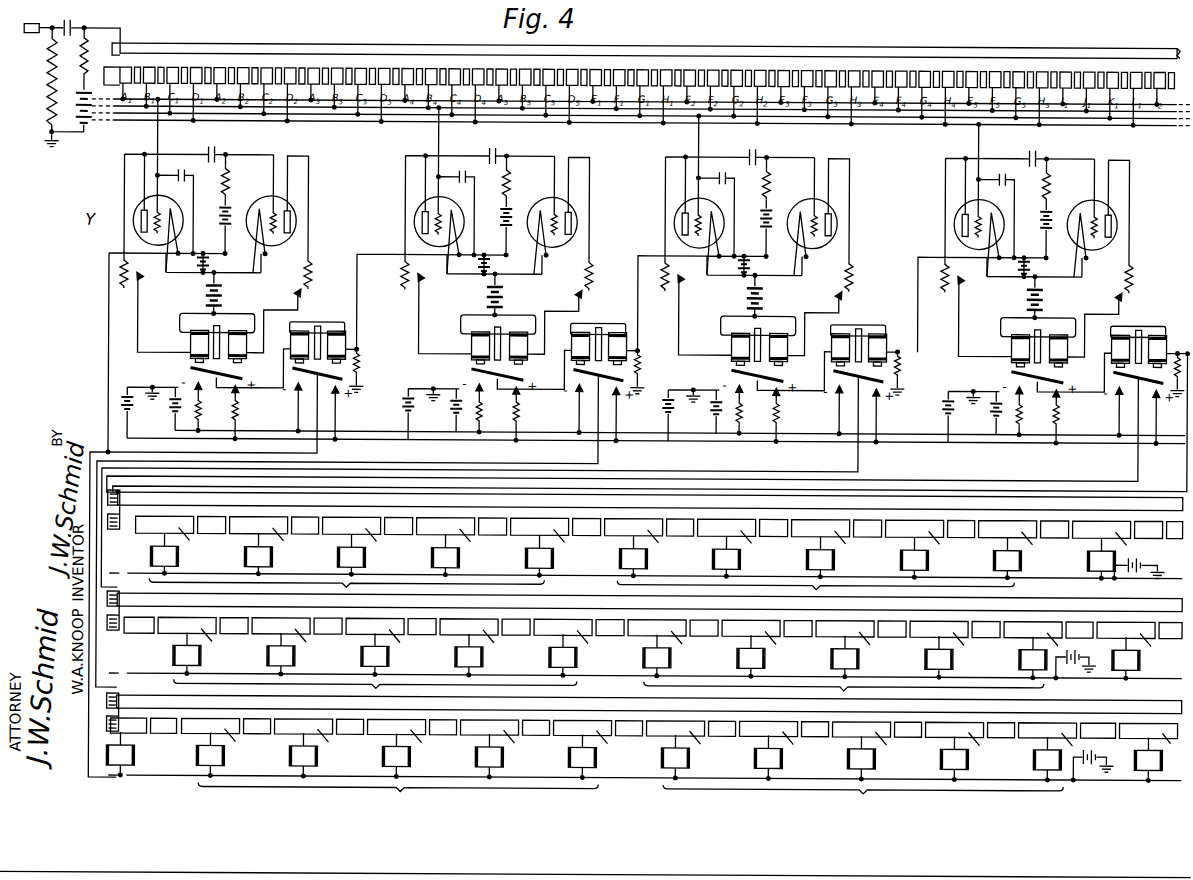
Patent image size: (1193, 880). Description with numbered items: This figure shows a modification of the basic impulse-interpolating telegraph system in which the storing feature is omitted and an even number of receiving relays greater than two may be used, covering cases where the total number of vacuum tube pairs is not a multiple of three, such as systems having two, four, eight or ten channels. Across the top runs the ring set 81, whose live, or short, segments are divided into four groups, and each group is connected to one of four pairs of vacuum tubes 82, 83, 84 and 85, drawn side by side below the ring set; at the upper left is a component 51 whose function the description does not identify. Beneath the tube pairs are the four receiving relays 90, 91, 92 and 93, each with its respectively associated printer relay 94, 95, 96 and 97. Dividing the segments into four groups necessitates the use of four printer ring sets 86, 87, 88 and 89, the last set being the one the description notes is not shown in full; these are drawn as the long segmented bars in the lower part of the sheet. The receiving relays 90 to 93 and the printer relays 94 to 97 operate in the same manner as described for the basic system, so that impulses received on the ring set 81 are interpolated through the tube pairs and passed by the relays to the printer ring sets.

The signal input circuit 51 is at (100, 125).
The ring set 81 is at (180, 60).
The pair of vacuum tubes 82 is at (253, 165).
The pair of vacuum tubes 83 is at (534, 165).
The pair of vacuum tubes 84 is at (794, 165).
The pair of vacuum tubes 85 is at (1074, 165).
The printer ring set 86 is at (368, 520).
The printer ring set 87 is at (396, 615).
The printer ring set 88 is at (422, 716).
The printer ring set 89 is at (103, 778).
The receiving relay 90 is at (180, 342).
The receiving relay 91 is at (461, 342).
The receiving relay 92 is at (721, 342).
The receiving relay 93 is at (1001, 342).
The printer relay 94 is at (321, 328).
The printer relay 95 is at (602, 328).
The printer relay 96 is at (862, 328).
The printer relay 97 is at (1142, 328).